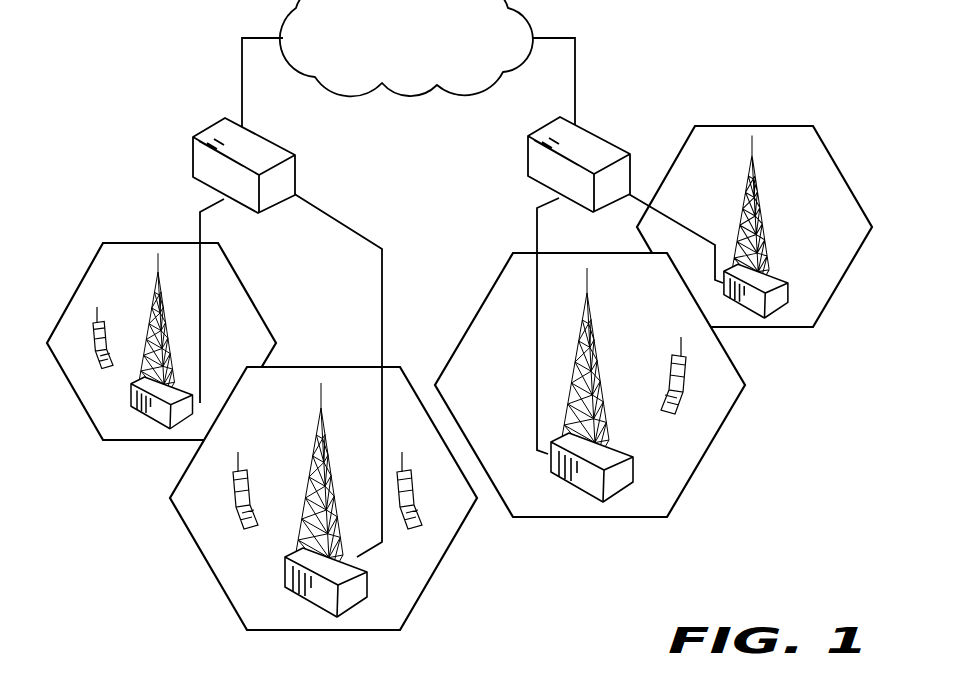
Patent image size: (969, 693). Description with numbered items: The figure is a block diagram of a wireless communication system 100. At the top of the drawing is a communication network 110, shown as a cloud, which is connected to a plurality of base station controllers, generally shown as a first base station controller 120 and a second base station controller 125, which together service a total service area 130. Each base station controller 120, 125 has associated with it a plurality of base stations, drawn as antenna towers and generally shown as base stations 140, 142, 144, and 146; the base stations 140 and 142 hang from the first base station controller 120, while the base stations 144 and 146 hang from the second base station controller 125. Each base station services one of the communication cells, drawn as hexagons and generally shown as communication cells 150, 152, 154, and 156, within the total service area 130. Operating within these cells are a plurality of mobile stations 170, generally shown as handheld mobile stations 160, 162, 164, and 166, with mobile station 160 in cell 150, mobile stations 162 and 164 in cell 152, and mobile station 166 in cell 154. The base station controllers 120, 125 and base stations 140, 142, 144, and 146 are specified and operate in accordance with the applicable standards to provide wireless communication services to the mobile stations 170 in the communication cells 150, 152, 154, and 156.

The wireless communication system 100 is at (452, 315).
The communication network 110 is at (405, 95).
The base station controller 120 is at (211, 129).
The base station controller 125 is at (612, 141).
The total service area 130 is at (459, 360).
The base station 140 is at (156, 267).
The base station 142 is at (317, 418).
The base station 144 is at (593, 303).
The base station 146 is at (757, 178).
The communication cell 150 is at (165, 243).
The communication cell 152 is at (348, 367).
The communication cell 154 is at (472, 320).
The communication cell 156 is at (781, 126).
The mobile station 160 is at (107, 320).
The mobile station 162 is at (250, 478).
The mobile station 164 is at (419, 488).
The mobile station 166 is at (662, 369).
The mobile stations 170 is at (84, 368).